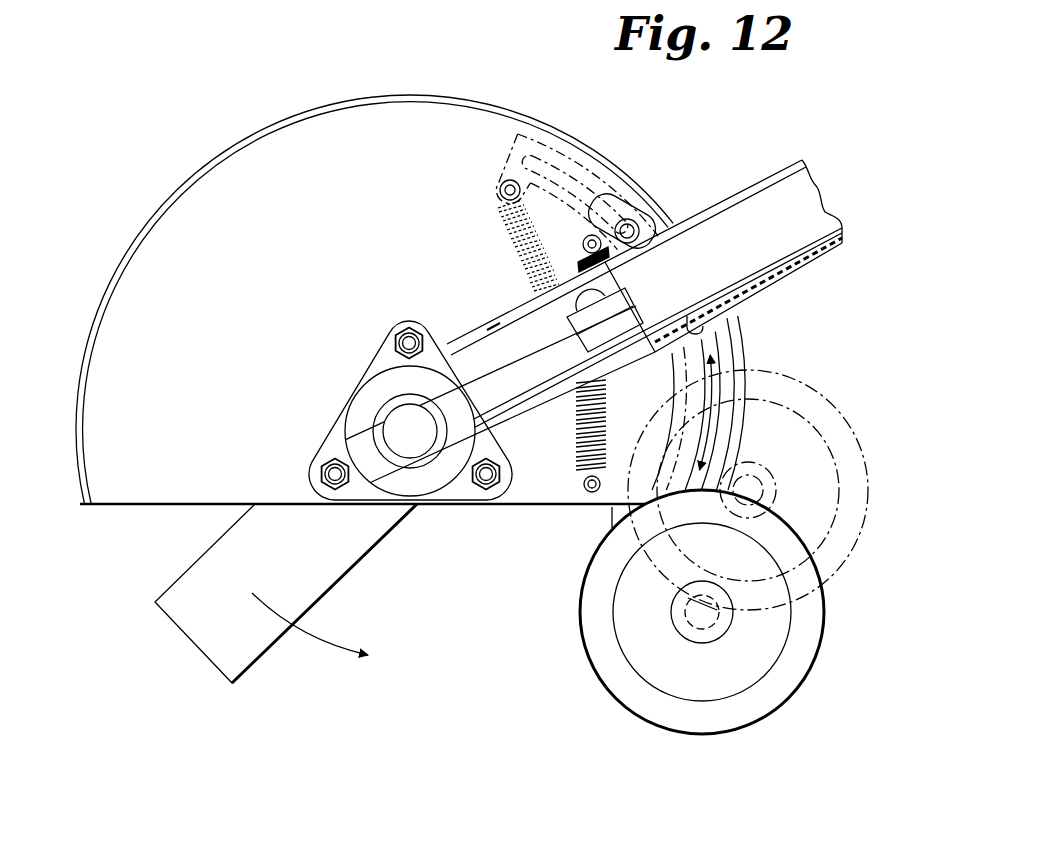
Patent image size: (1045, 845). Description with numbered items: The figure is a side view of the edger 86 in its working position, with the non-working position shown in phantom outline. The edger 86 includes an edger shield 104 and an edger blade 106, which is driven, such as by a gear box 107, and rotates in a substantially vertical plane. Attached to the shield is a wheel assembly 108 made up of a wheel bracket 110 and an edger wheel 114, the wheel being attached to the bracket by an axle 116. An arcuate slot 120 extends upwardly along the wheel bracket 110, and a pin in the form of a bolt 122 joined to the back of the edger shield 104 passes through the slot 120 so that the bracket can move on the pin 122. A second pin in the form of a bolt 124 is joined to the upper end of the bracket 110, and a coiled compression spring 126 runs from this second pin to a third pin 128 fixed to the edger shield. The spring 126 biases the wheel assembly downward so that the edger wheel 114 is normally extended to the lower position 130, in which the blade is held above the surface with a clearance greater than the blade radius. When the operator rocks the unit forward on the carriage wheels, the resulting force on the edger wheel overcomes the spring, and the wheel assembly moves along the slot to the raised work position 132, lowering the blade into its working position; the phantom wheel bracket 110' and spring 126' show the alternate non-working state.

The edger 86 is at (190, 153).
The edger shield 104 is at (300, 140).
The edger blade 106 is at (258, 660).
The gear box 107 is at (440, 477).
The wheel assembly 108 is at (745, 362).
The wheel bracket 110 is at (730, 390).
The wheel bracket (non-working position) 110' is at (555, 140).
The edger wheel 114 is at (780, 703).
The axle 116 is at (700, 605).
The arcuate slot 120 is at (690, 328).
The bolt (pin) 122 is at (652, 215).
The bolt (second pin) 124 is at (593, 235).
The coiled compression spring 126 is at (533, 491).
The coiled compression spring (non-working position) 126' is at (459, 235).
The third pin 128 is at (600, 497).
The lower position 130 is at (595, 690).
The raised work position 132 is at (838, 392).